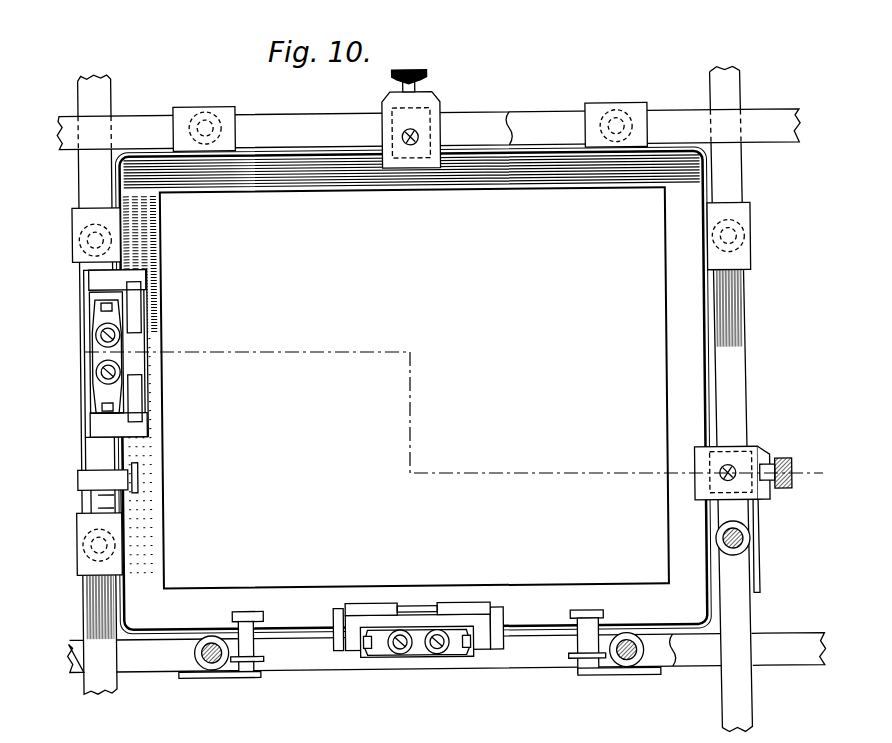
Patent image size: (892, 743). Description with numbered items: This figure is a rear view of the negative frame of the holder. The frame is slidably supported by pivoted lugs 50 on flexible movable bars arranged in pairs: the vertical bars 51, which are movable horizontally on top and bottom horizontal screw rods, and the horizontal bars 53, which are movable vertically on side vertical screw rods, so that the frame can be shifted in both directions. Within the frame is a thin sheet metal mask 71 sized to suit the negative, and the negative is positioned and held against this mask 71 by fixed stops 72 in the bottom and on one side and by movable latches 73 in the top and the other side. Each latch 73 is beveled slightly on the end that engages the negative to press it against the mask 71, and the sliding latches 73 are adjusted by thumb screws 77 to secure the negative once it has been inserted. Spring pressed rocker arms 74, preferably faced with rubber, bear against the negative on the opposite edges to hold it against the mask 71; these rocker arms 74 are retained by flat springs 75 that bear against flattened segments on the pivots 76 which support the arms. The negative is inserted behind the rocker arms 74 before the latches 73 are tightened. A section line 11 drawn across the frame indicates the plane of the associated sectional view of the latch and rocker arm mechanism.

The section line 11 is at (455, 416).
The pivoted lugs 50 is at (207, 126).
The vertical bars 51 is at (97, 93).
The horizontal bars 53 is at (135, 127).
The sheet metal mask 71 is at (673, 312).
The fixed stops 72 is at (140, 482).
The movable latches 73 is at (425, 117).
The rocker arms 74 is at (140, 272).
The flat springs 75 is at (115, 395).
The pivots 76 is at (117, 305).
The thumb screws 77 is at (415, 72).